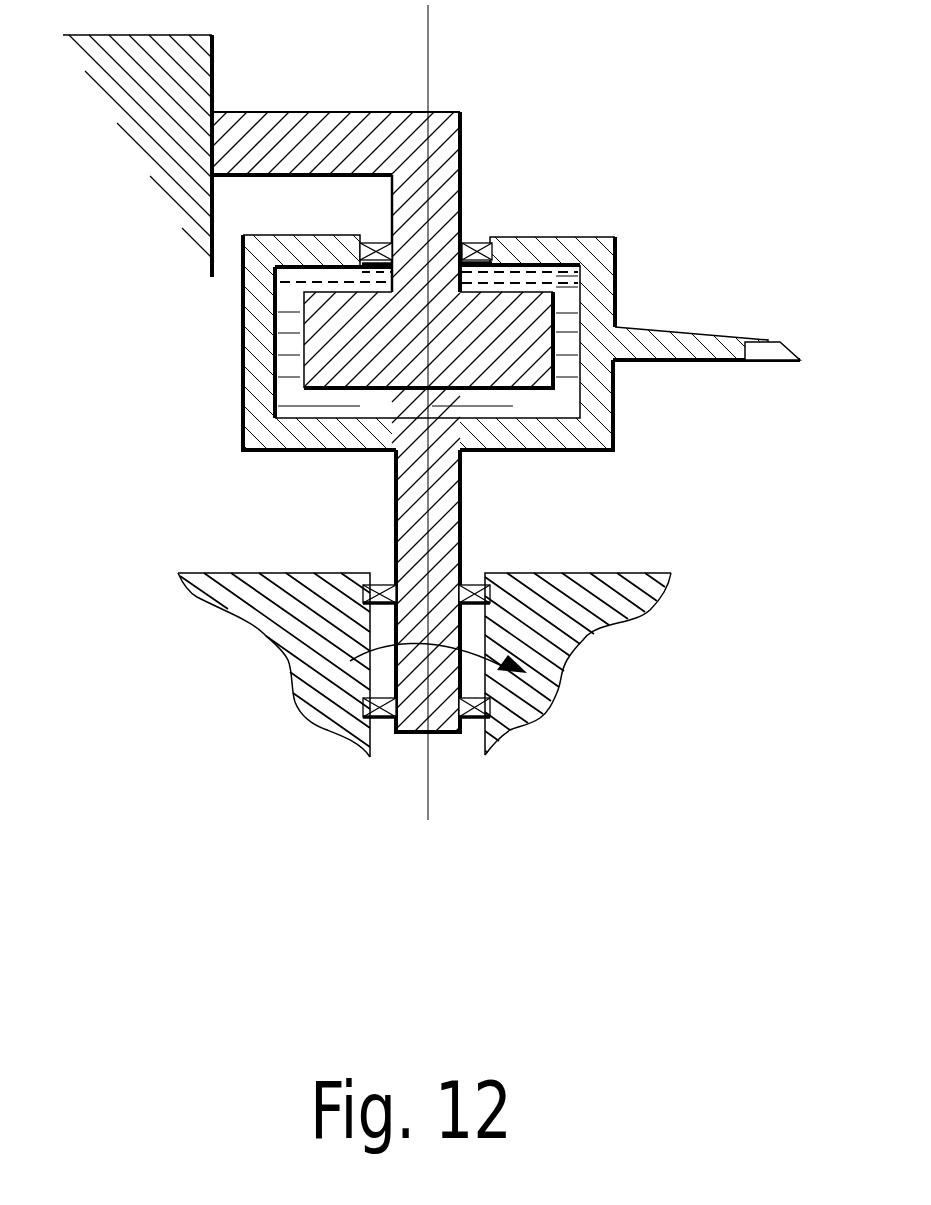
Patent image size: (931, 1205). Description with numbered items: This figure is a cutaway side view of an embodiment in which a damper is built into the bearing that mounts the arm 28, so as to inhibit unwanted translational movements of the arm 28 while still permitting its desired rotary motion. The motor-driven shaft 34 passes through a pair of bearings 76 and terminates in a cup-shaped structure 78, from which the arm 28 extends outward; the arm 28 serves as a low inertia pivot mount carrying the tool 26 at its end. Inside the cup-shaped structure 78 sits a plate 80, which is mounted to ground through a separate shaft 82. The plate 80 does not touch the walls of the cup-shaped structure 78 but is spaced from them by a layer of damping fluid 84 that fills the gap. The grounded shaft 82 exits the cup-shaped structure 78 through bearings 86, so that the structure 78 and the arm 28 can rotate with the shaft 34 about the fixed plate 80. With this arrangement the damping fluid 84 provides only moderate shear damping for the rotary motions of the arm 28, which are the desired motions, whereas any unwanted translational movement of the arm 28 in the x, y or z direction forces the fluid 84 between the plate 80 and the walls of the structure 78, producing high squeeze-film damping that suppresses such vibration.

The tool 26 is at (780, 352).
The arm 28 is at (680, 338).
The shaft 34 is at (440, 497).
The bearings 76 is at (366, 591).
The cup-shaped structure 78 is at (257, 410).
The plate 80 is at (497, 308).
The shaft 82 is at (273, 125).
The damping fluid 84 is at (557, 290).
The bearings 86 is at (375, 243).